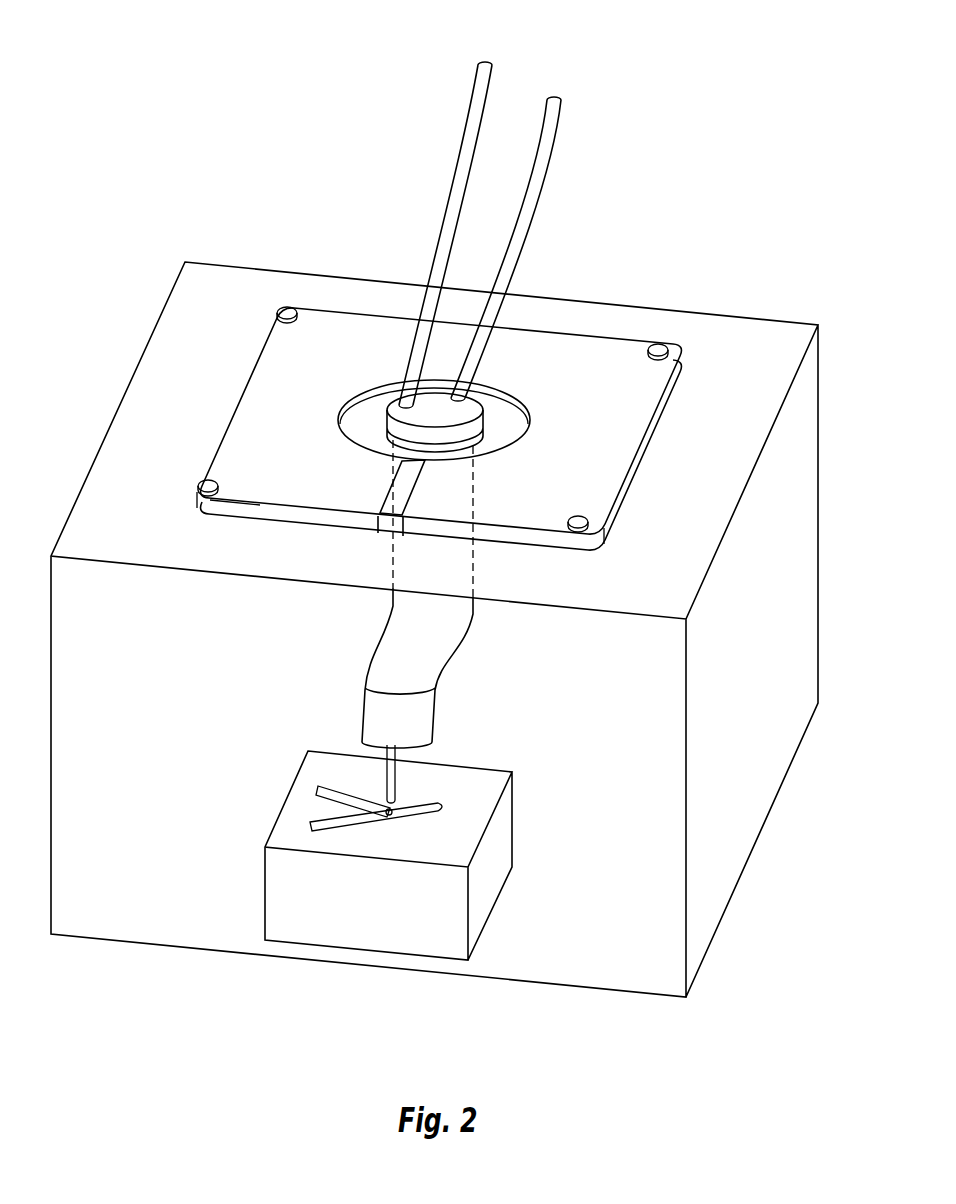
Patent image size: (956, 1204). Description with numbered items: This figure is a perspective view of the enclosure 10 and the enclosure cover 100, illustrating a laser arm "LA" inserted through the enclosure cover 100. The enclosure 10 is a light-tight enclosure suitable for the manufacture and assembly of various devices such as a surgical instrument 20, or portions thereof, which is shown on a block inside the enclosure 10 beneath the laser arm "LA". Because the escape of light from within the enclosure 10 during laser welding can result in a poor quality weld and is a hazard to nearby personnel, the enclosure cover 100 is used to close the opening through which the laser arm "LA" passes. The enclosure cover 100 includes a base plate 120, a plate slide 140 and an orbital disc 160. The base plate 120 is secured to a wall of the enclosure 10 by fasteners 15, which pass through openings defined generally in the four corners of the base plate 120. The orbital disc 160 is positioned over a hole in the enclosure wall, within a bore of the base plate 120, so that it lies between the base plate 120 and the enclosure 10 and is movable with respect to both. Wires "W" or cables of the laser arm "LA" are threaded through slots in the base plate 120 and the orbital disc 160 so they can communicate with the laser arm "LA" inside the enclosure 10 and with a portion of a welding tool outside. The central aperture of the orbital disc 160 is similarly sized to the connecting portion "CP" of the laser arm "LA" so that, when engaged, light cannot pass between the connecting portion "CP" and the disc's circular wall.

The enclosure 10 is at (746, 330).
The fastener 15 is at (287, 306).
The surgical instrument 20 is at (395, 836).
The enclosure cover 100 is at (217, 355).
The base plate 120 is at (568, 352).
The plate slide 140 is at (404, 487).
The orbital disc 160 is at (512, 420).
The wires W is at (478, 107).
The connecting portion CP is at (433, 390).
The laser arm LA is at (450, 655).